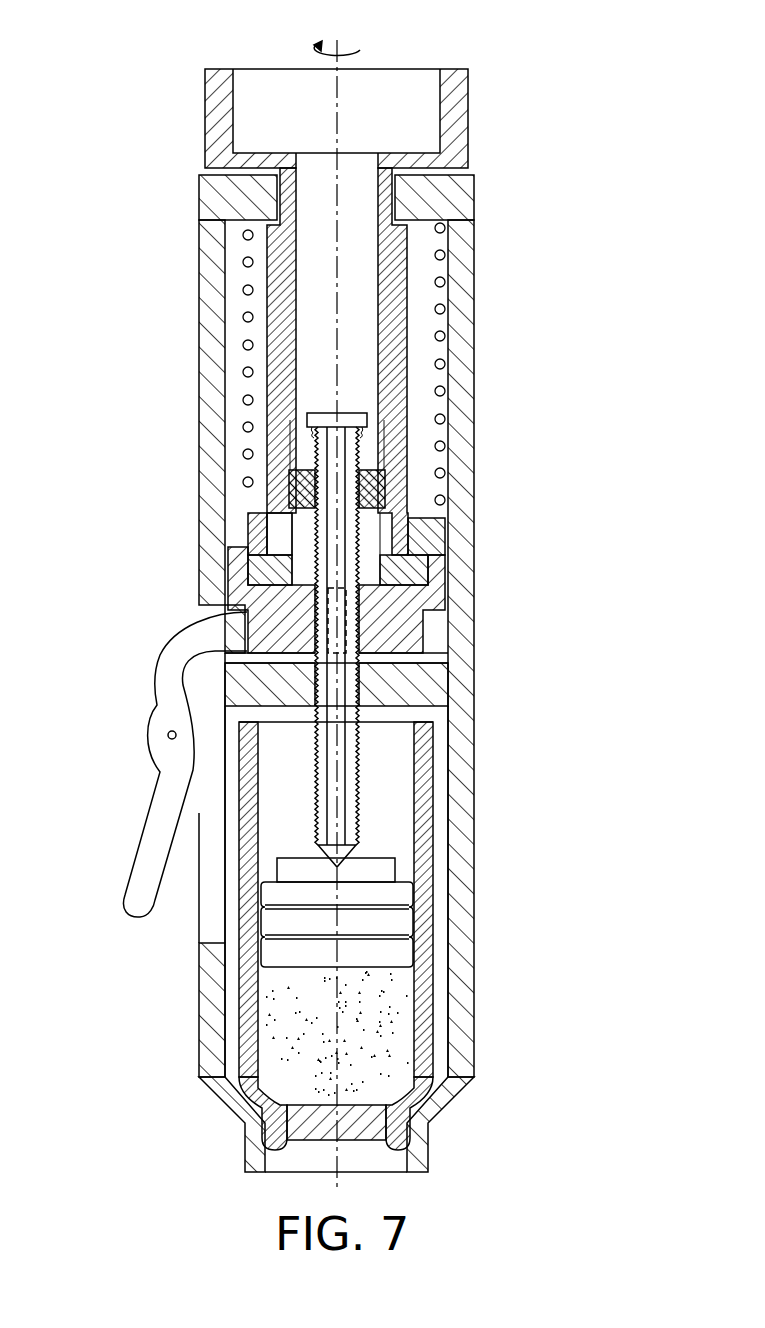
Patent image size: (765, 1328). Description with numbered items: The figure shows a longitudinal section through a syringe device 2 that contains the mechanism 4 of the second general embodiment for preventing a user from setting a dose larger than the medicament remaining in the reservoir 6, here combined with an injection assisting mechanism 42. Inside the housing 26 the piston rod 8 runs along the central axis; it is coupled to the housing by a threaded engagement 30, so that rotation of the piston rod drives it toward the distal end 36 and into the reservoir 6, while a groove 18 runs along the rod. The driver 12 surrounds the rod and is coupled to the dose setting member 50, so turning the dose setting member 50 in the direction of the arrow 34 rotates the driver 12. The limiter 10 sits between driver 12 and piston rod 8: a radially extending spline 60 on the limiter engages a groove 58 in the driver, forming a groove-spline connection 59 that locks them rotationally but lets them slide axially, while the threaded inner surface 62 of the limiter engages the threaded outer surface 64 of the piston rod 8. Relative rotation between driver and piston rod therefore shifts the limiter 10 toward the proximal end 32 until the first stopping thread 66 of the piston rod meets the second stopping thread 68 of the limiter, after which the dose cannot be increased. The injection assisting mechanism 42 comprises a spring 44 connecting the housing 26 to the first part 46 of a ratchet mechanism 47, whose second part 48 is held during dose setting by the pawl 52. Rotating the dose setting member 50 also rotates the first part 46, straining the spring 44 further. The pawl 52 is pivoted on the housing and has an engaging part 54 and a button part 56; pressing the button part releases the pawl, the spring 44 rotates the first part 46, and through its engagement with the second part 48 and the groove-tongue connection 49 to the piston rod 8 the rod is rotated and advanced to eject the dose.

The syringe device 2 is at (155, 143).
The mechanism 4 is at (98, 207).
The reservoir 6 is at (280, 1032).
The piston rod 8 is at (442, 424).
The limiter 10 is at (276, 492).
The driver 12 is at (408, 289).
The groove 18 is at (335, 802).
The housing 26 is at (457, 200).
The threaded engagement 30 is at (440, 689).
The proximal end 32 is at (342, 402).
The arrow 34 is at (360, 50).
The distal end 36 is at (345, 852).
The injection assisting mechanism 42 is at (446, 458).
The spring 44 is at (446, 474).
The first part of ratchet mechanism 46 is at (447, 527).
The ratchet mechanism 47 is at (447, 551).
The second part of ratchet mechanism 48 is at (453, 595).
The groove-tongue connection 49 is at (350, 627).
The dose setting member 50 is at (455, 104).
The pawl 52 is at (127, 738).
The engaging part 54 is at (215, 632).
The button part 56 is at (145, 882).
The groove 58 is at (238, 541).
The groove-spline connection 59 is at (290, 480).
The spline 60 is at (290, 533).
The threaded inner surface 62 is at (386, 494).
The threaded outer surface 64 is at (454, 448).
The first stopping thread 66 is at (308, 436).
The second stopping thread 68 is at (312, 470).